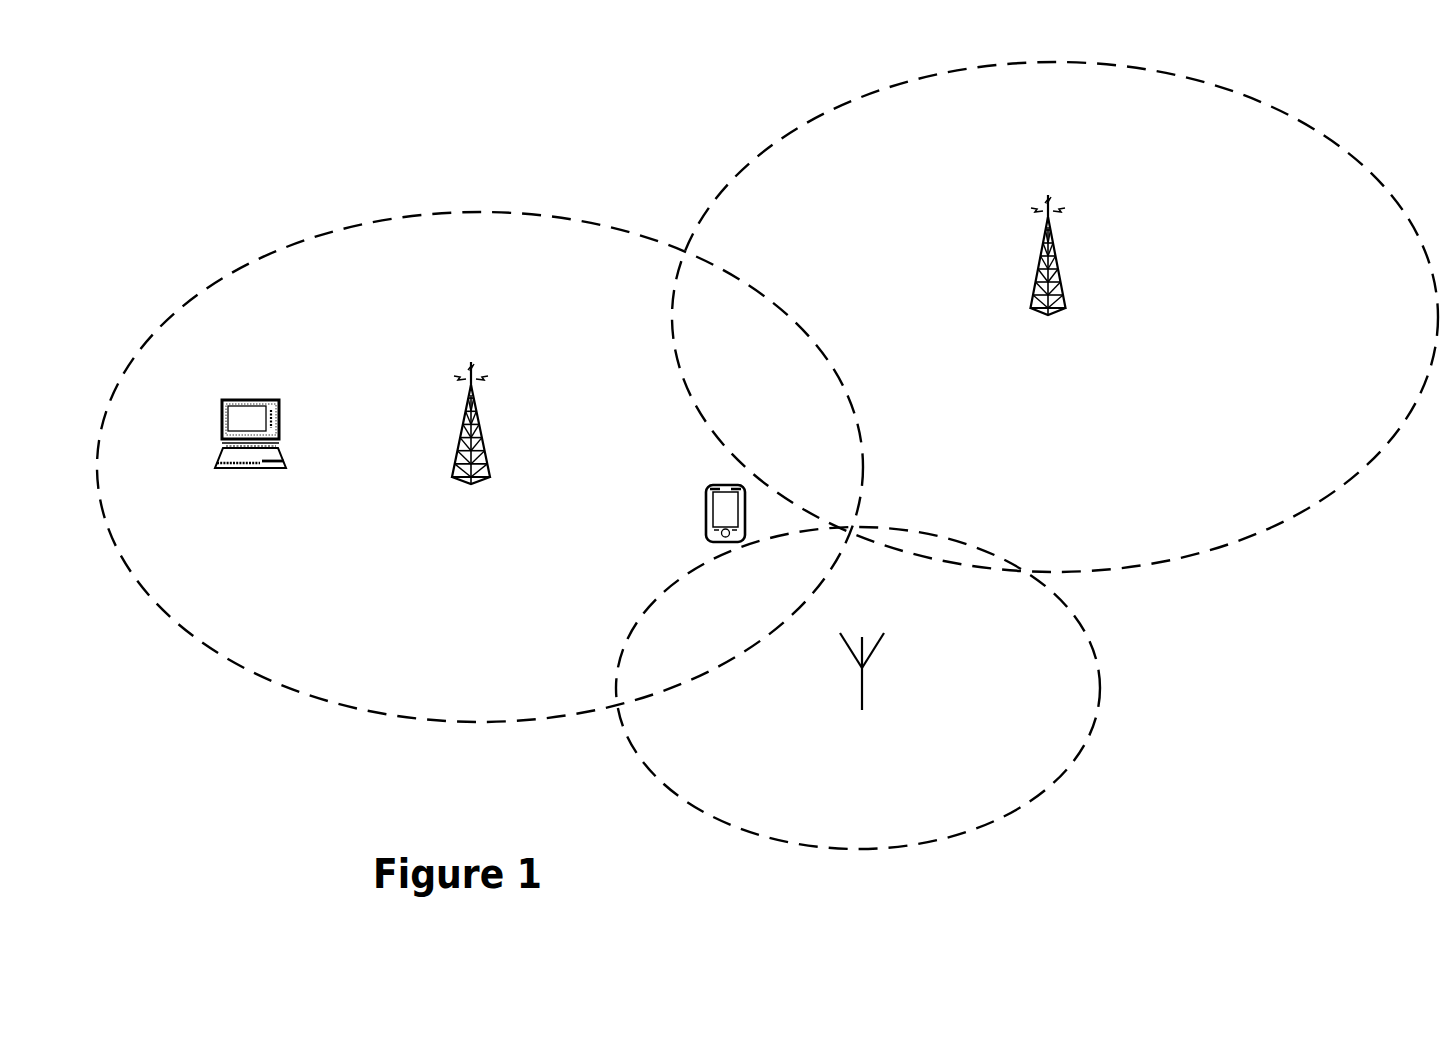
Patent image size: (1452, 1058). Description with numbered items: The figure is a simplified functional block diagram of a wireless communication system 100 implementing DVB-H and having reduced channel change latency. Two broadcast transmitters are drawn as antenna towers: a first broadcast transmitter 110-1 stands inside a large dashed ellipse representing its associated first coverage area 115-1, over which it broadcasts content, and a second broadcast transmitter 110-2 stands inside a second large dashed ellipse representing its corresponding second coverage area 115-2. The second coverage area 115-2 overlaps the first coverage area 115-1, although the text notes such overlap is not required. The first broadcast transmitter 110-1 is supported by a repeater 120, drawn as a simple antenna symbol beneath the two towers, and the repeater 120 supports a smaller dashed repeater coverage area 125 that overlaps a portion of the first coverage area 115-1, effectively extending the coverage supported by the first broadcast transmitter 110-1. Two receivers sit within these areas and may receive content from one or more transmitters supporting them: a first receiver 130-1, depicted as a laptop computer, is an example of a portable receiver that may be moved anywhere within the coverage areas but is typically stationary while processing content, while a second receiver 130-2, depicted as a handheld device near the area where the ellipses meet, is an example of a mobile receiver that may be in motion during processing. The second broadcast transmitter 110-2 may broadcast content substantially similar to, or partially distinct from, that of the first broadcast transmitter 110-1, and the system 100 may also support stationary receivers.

The wireless communication system 100 is at (301, 69).
The first broadcast transmitter 110-1 is at (534, 447).
The second broadcast transmitter 110-2 is at (1055, 320).
The first coverage area 115-1 is at (310, 240).
The second coverage area 115-2 is at (1160, 563).
The repeater 120 is at (873, 710).
The repeater coverage area 125 is at (1022, 808).
The first receiver 130-1 is at (268, 474).
The second receiver 130-2 is at (693, 497).